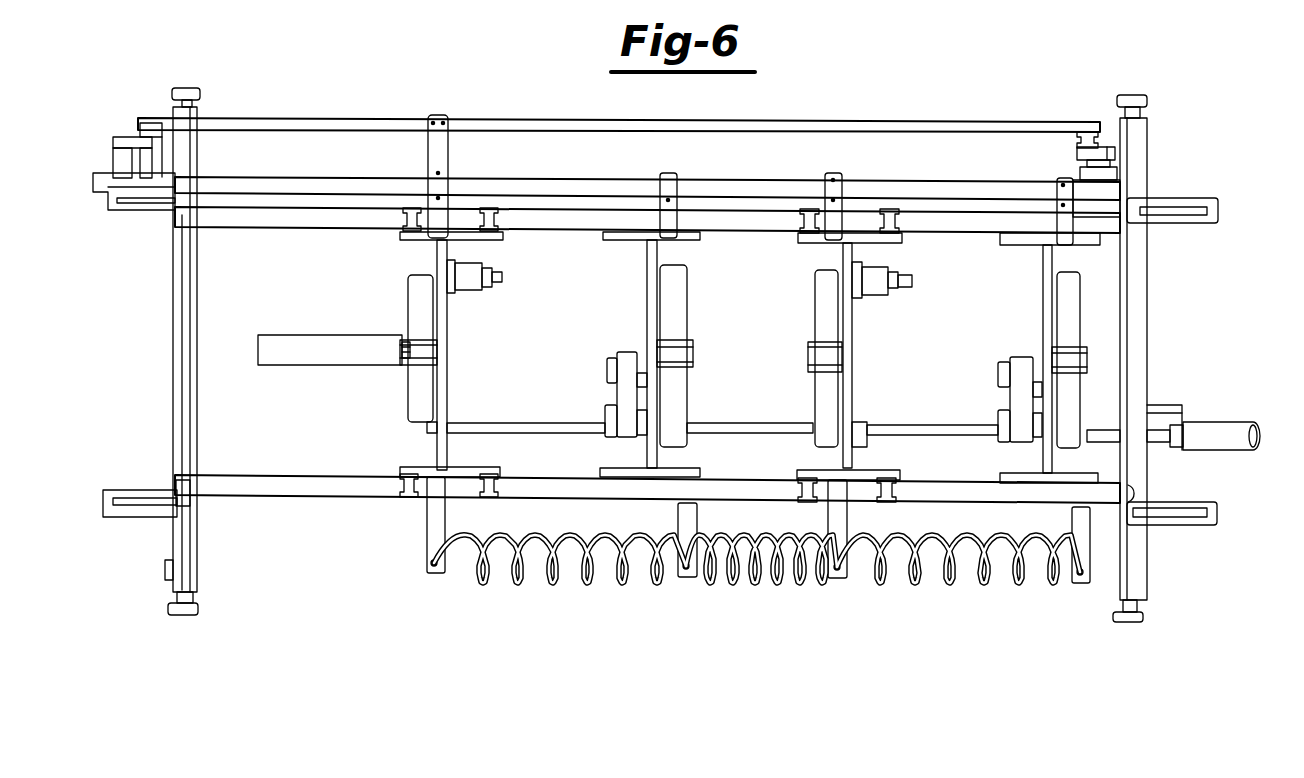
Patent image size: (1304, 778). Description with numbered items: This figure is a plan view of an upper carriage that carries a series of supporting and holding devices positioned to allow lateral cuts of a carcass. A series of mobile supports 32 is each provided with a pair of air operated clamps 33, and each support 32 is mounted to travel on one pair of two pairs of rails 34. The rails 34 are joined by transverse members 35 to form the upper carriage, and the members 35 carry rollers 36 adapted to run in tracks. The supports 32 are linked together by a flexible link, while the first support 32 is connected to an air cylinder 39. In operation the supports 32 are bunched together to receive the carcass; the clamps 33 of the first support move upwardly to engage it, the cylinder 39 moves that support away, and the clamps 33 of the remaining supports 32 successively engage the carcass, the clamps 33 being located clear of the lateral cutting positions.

The mobile support 32 is at (860, 356).
The air operated clamp 33 is at (822, 309).
The rail 34 is at (367, 223).
The transverse member 35 is at (198, 422).
The roller 36 is at (200, 92).
The air cylinder 39 is at (1223, 428).